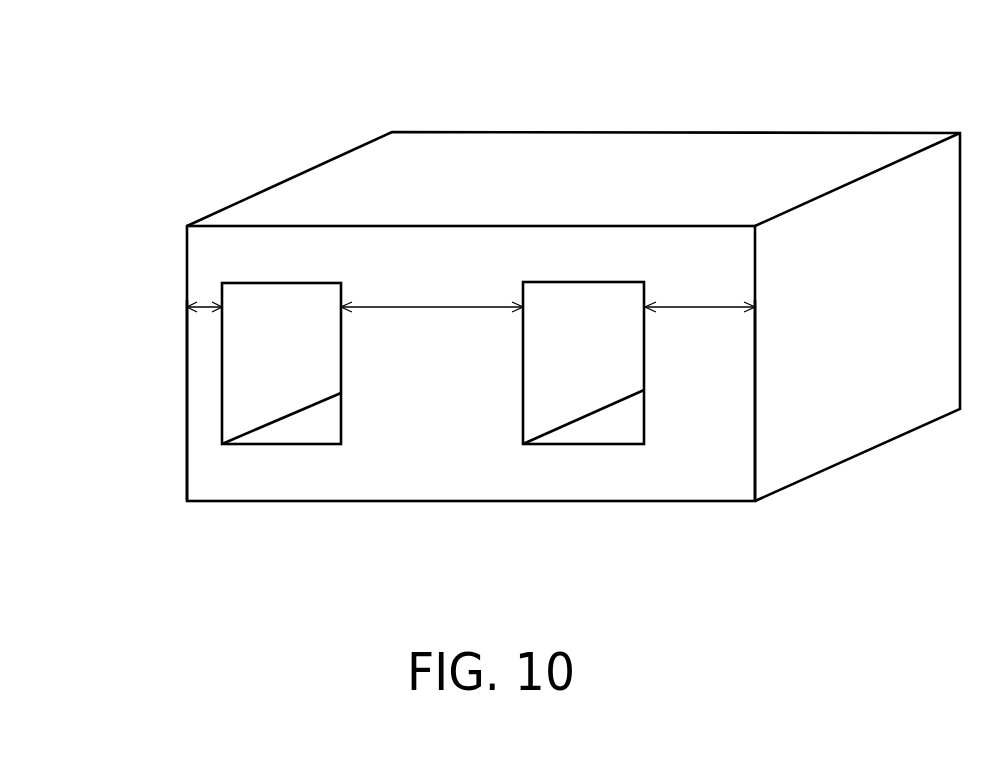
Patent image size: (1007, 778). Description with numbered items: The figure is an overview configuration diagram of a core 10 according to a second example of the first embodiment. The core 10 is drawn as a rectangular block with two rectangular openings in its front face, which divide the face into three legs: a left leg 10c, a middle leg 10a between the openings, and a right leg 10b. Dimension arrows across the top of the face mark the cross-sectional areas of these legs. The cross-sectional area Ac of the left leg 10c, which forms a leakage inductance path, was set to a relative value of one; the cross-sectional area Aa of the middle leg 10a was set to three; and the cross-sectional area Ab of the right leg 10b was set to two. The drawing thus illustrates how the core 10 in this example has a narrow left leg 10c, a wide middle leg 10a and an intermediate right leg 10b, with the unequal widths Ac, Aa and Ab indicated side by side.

The core 10 is at (188, 130).
The middle leg 10a is at (442, 423).
The right leg 10b is at (712, 423).
The left leg 10c is at (207, 394).
The cross-sectional area of the middle leg Aa is at (432, 286).
The cross-sectional area of the right leg Ab is at (700, 286).
The cross-sectional area of the left leg Ac is at (205, 303).